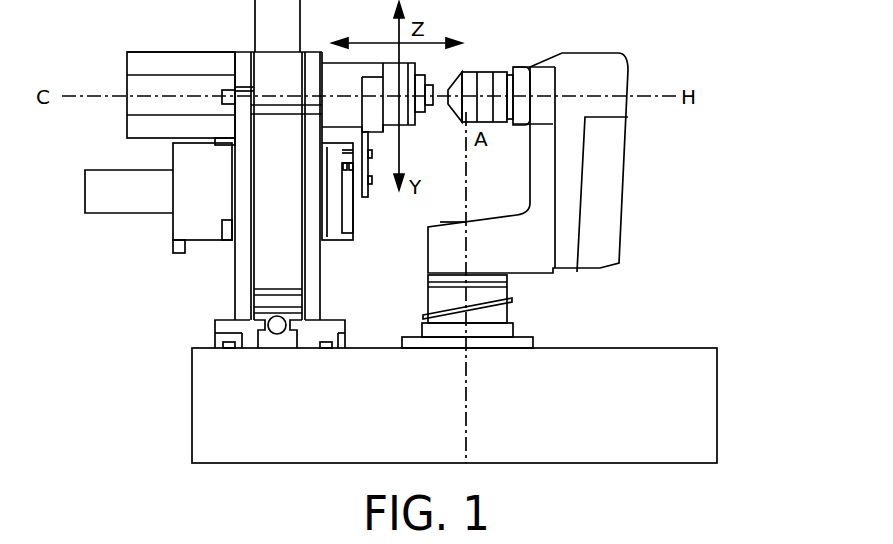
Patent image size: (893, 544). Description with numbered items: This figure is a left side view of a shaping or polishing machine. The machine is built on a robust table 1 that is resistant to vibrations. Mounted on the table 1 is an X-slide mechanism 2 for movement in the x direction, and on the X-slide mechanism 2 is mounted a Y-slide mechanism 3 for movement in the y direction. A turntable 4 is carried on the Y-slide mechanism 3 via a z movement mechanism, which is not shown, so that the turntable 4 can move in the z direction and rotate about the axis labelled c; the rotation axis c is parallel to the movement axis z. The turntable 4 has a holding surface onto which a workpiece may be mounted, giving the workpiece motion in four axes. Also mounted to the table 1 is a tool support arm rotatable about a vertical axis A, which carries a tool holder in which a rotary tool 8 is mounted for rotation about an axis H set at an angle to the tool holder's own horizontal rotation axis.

The table 1 is at (705, 393).
The X-slide mechanism 2 is at (222, 327).
The Y-slide mechanism 3 is at (267, 268).
The turntable 4 is at (437, 88).
The rotary tool 8 is at (457, 110).